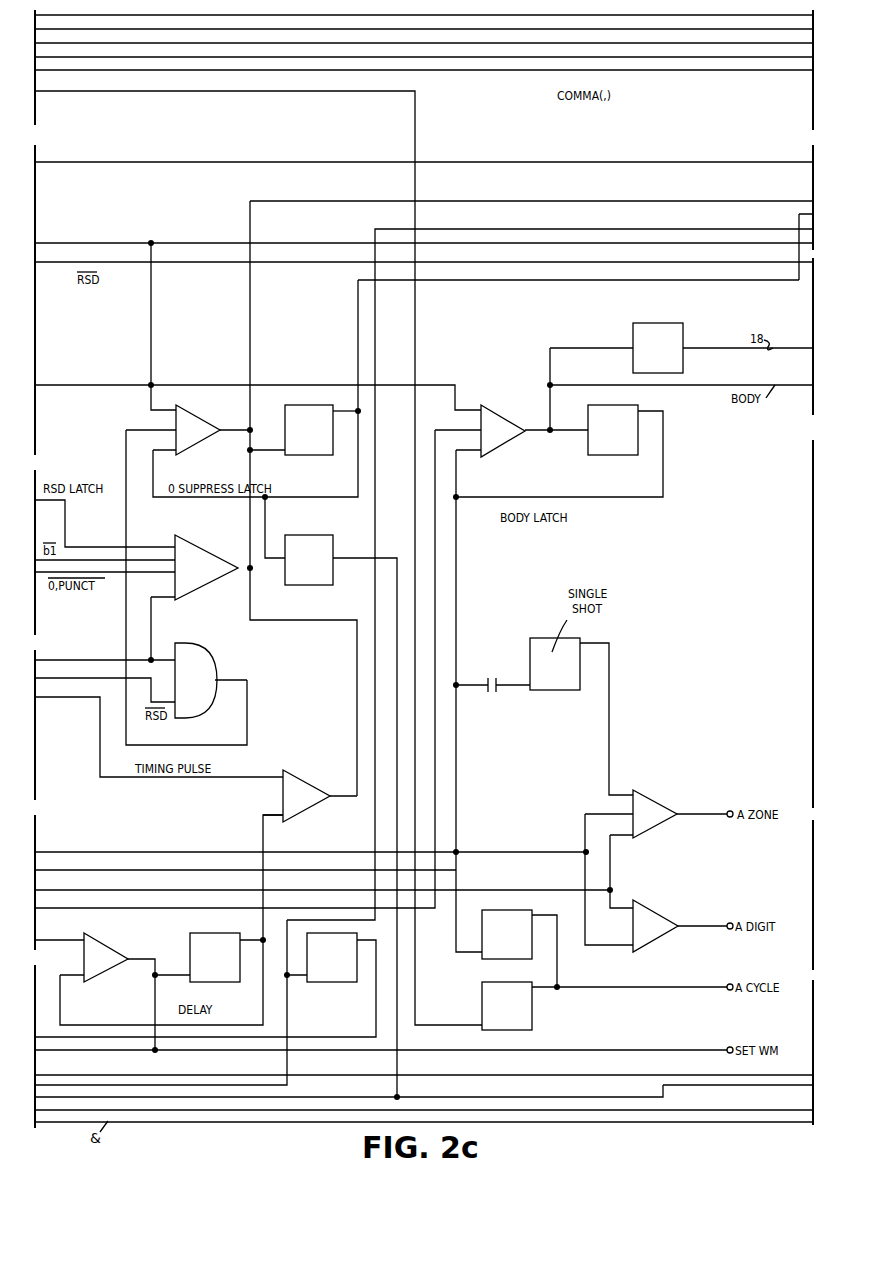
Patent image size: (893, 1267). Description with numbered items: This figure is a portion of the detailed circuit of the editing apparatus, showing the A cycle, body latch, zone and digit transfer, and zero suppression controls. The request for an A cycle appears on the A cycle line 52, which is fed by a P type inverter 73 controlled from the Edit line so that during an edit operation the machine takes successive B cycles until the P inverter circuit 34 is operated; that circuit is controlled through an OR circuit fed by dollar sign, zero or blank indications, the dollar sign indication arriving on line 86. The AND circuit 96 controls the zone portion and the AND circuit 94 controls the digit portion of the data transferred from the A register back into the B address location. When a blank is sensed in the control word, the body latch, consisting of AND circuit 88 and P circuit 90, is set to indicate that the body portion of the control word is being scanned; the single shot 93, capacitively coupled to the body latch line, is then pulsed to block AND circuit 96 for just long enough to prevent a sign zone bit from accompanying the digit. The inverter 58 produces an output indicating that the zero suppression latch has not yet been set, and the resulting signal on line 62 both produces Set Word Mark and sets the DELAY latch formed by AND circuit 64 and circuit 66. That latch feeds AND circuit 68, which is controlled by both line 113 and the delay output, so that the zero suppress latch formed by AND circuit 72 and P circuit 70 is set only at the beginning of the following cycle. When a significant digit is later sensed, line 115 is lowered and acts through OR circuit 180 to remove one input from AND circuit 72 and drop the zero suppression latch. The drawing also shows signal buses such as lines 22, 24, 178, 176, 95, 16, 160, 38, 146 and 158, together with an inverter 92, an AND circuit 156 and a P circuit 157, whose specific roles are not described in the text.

The comma signal line 22 is at (525, 55).
The signal line 24 is at (678, 43).
The signal line 178 is at (753, 16).
The signal line 176 is at (496, 162).
The signal line 95 is at (596, 230).
The RSD line 16 is at (296, 246).
The signal line 160 is at (575, 280).
The signal line 38 is at (277, 386).
The AND circuit of the zero suppression latch 72 is at (200, 430).
The P circuit of the zero suppression latch 70 is at (285, 419).
The AND circuit of the body latch 88 is at (508, 412).
The P circuit of the body latch 90 is at (588, 421).
The inverter 92 is at (683, 335).
The inverter 58 is at (333, 545).
The AND gate 156 is at (215, 556).
The OR circuit 180 is at (195, 652).
The line 115 is at (48, 660).
The line 113 is at (48, 698).
The AND circuit 68 is at (302, 786).
The single shot 93 is at (553, 690).
The AND circuit 96 is at (665, 813).
The AND circuit 94 is at (658, 936).
The P inverter circuit 34 is at (525, 931).
The P type inverter 73 is at (482, 998).
The A cycle line 52 is at (638, 987).
The line 62 is at (567, 1050).
The signal line 146 is at (511, 1076).
The signal line 158 is at (723, 1082).
The AND circuit of the DELAY latch 64 is at (110, 955).
The circuit of the DELAY latch 66 is at (192, 952).
The latch 157 is at (313, 985).
The dollar sign line 86 is at (214, 1111).